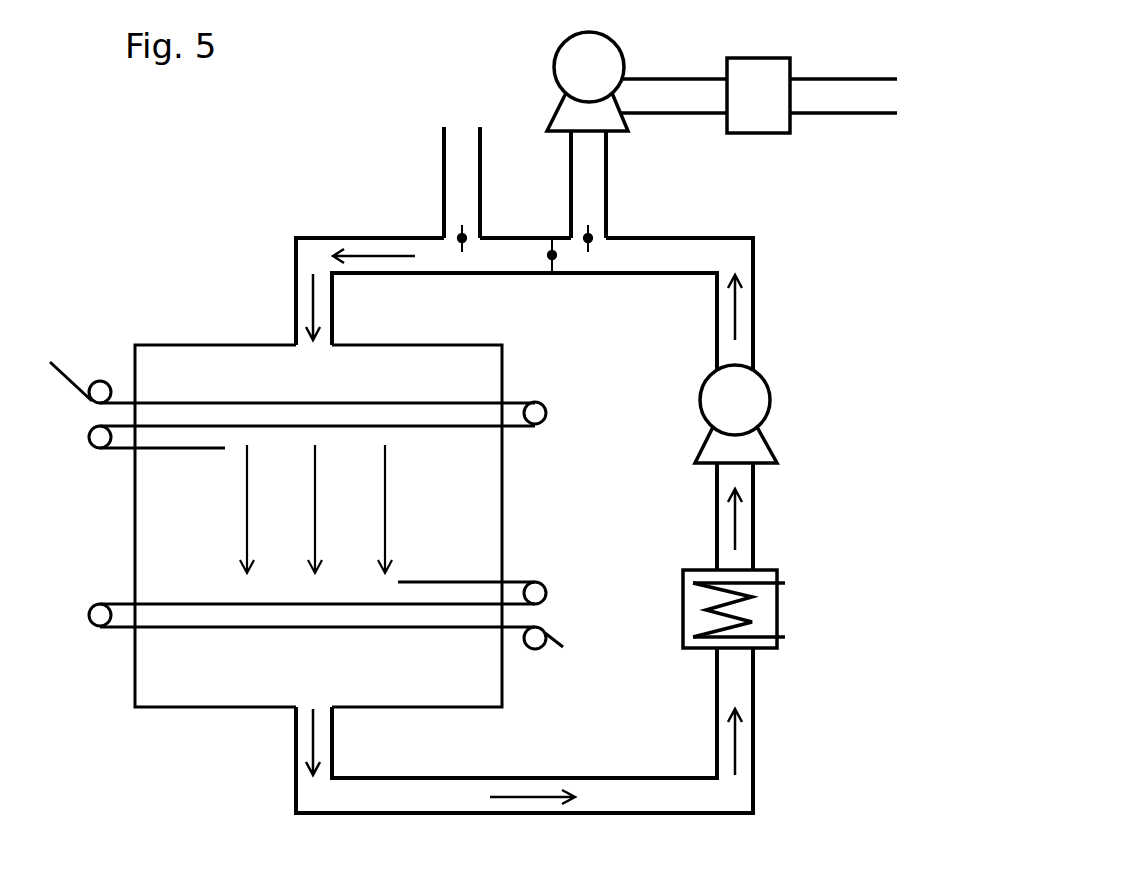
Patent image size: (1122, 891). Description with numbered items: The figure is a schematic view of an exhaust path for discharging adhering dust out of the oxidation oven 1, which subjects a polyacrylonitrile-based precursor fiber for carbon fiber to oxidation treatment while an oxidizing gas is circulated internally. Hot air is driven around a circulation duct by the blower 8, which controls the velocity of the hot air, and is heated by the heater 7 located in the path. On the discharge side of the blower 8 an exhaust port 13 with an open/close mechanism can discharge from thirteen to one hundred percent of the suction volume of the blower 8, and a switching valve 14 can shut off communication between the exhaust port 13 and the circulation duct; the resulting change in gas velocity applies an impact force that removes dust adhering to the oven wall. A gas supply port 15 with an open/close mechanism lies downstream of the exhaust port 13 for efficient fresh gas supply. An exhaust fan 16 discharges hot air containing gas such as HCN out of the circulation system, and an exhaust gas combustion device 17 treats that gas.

The oxidation oven 1 is at (210, 343).
The heater 7 is at (768, 603).
The blower 8 is at (772, 397).
The exhaust port 13 is at (592, 192).
The switching valve 14 is at (552, 237).
The gas supply port 15 is at (463, 197).
The exhaust fan 16 is at (563, 57).
The exhaust gas combustion device 17 is at (762, 115).